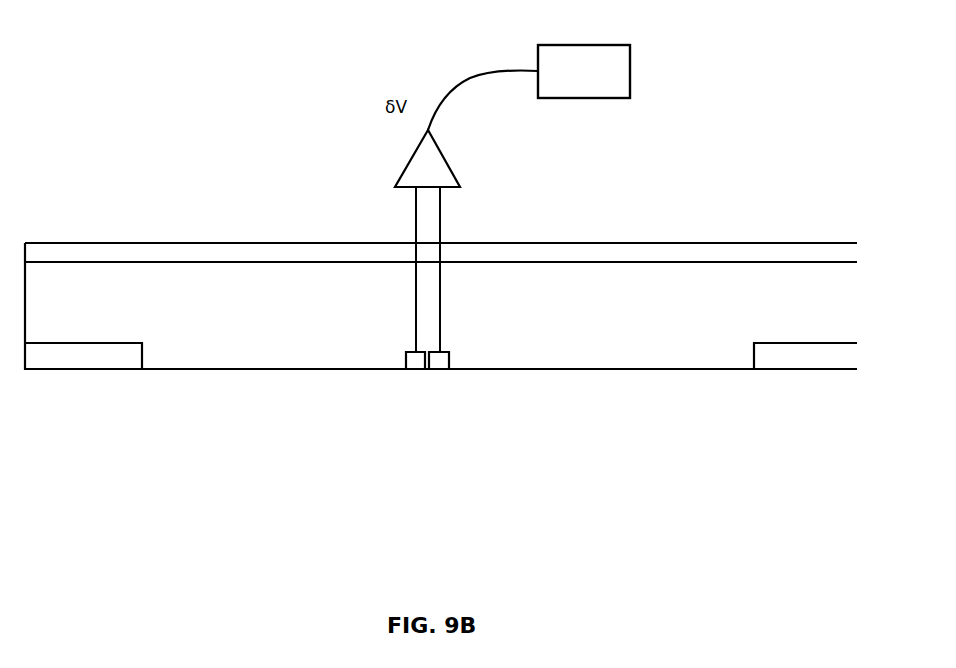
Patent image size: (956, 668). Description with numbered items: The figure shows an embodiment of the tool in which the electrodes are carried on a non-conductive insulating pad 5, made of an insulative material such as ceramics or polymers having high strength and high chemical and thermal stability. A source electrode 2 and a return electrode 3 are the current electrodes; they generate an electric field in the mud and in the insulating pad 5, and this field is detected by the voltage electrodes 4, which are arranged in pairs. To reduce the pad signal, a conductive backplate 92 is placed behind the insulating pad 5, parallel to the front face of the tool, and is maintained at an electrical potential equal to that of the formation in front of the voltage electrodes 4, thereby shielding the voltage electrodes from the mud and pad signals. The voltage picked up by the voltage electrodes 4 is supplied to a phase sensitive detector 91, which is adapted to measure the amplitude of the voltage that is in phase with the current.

The source electrode 2 is at (77, 370).
The return electrode 3 is at (827, 370).
The voltage electrodes 4 is at (433, 371).
The insulating pad 5 is at (698, 288).
The phase sensitive detector 91 is at (630, 72).
The conductive backplate 92 is at (160, 252).